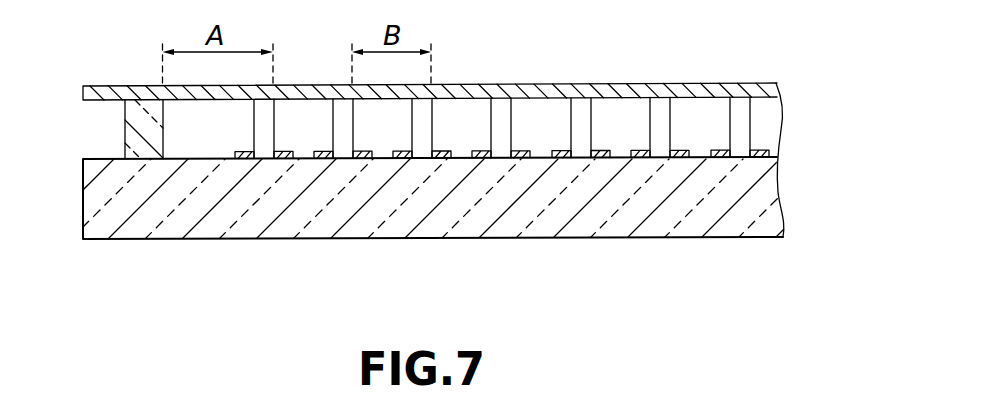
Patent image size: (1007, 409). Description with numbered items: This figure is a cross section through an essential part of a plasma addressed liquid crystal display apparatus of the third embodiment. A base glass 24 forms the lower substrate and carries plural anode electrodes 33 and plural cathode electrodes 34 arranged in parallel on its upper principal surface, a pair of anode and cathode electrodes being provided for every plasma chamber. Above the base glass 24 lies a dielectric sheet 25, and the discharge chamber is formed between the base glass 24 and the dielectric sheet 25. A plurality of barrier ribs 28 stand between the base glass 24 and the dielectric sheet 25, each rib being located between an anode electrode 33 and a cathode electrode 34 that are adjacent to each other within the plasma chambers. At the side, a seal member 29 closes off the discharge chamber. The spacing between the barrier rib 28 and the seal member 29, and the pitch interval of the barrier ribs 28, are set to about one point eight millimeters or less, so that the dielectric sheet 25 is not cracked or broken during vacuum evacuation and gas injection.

The base glass 24 is at (218, 228).
The dielectric sheet 25 is at (587, 92).
The barrier rib 28 is at (743, 118).
The seal member 29 is at (133, 127).
The anode electrode 33 is at (363, 162).
The cathode electrode 34 is at (473, 162).